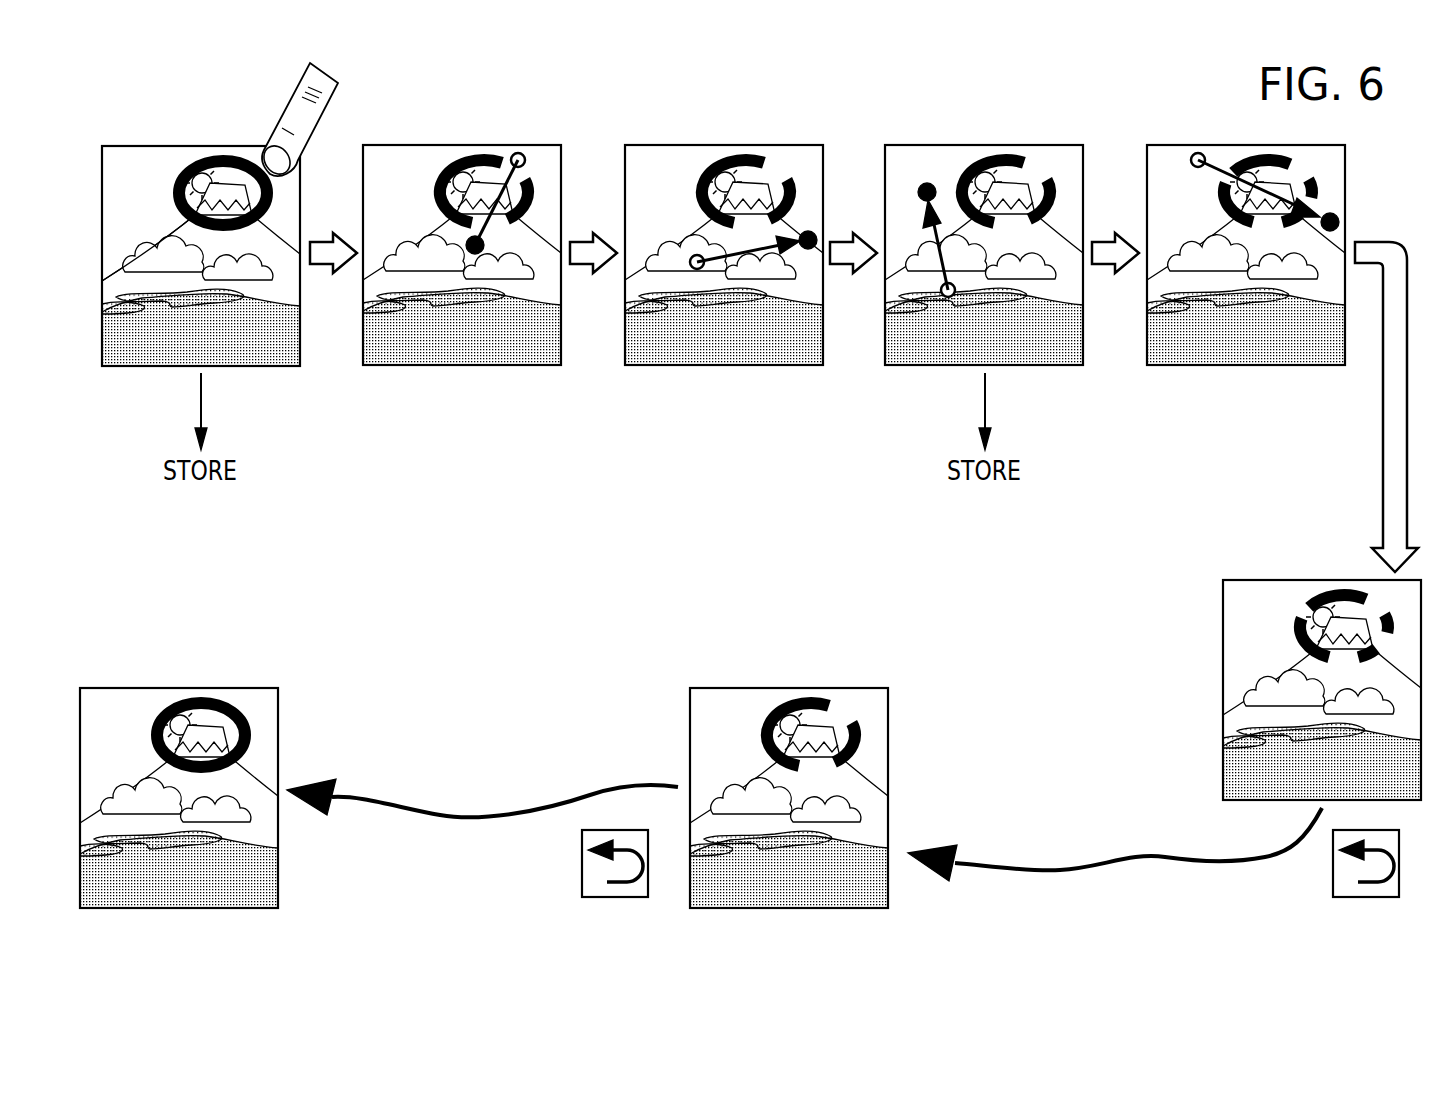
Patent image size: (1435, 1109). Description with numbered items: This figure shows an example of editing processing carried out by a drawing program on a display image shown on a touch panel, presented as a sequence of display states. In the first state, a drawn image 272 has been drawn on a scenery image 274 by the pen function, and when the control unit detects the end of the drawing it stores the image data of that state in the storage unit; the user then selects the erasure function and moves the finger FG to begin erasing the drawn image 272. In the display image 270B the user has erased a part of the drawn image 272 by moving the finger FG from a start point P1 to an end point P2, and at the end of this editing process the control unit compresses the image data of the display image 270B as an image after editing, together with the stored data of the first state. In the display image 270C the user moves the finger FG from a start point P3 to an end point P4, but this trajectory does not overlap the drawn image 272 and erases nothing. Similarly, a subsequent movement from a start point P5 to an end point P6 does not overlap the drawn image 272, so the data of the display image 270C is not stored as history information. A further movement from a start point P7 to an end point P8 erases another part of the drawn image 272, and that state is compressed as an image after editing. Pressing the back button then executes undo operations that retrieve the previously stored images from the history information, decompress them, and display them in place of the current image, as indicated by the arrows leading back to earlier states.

The display image 270B is at (471, 285).
The display image 270C is at (734, 285).
The drawn image 272 is at (192, 157).
The scenery image 274 is at (114, 289).
The finger FG is at (292, 101).
The start point P1 is at (536, 164).
The end point P2 is at (493, 211).
The start point P3 is at (688, 276).
The end point P4 is at (760, 254).
The start point P5 is at (934, 292).
The end point P6 is at (919, 235).
The start point P7 is at (1188, 175).
The end point P8 is at (1268, 211).